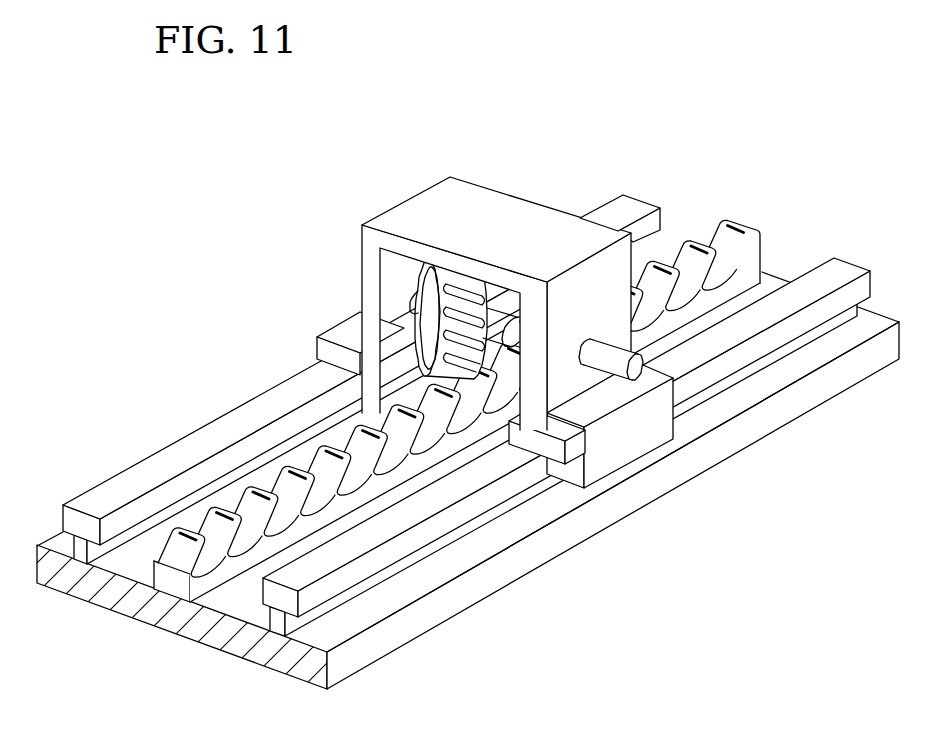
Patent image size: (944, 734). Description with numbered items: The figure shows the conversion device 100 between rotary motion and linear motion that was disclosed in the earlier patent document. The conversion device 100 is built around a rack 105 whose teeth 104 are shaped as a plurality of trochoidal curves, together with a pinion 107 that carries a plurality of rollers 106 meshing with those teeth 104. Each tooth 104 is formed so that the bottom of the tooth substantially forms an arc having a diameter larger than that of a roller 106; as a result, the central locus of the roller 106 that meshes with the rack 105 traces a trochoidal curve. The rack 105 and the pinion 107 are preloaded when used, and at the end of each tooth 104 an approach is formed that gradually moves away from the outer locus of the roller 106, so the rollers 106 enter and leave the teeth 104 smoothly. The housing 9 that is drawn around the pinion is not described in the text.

The conversion device 100 is at (245, 236).
The housing (carriage) 9 is at (414, 216).
The teeth 104 is at (272, 483).
The rack 105 is at (221, 573).
The rollers 106 is at (458, 318).
The pinion 107 is at (416, 280).